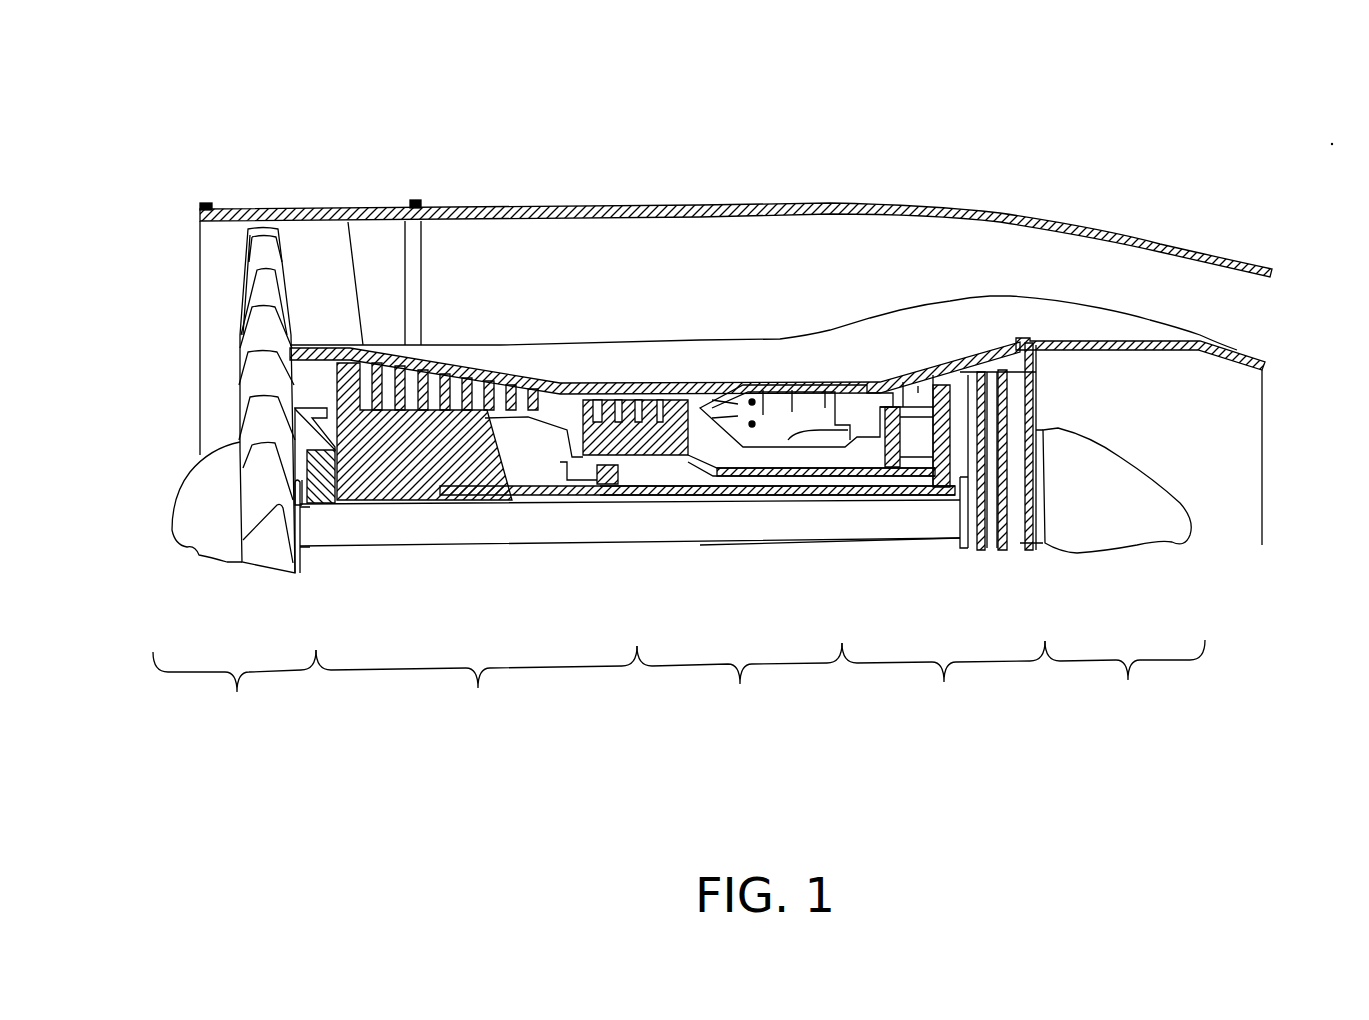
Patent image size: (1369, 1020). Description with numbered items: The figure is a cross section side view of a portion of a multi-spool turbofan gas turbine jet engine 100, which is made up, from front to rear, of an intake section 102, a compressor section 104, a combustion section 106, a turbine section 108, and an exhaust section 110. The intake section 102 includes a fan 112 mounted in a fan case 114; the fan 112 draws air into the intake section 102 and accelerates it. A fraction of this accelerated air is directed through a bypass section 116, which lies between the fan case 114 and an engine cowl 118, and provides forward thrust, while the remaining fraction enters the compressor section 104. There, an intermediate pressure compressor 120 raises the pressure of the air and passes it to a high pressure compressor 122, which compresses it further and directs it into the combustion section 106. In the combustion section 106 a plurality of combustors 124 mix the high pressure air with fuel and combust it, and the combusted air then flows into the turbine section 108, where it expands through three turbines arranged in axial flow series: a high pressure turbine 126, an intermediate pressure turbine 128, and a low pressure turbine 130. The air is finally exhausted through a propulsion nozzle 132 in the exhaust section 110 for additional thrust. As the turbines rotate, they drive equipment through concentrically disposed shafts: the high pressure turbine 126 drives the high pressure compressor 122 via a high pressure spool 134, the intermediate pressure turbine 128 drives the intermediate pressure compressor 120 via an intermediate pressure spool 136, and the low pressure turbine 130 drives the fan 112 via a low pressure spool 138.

The multi-spool turbofan gas turbine jet engine 100 is at (461, 152).
The intake section 102 is at (234, 588).
The compressor section 104 is at (502, 565).
The combustion section 106 is at (786, 589).
The turbine section 108 is at (943, 532).
The exhaust section 110 is at (1112, 573).
The fan 112 is at (243, 345).
The fan case 114 is at (322, 208).
The bypass section 116 is at (636, 220).
The engine cowl 118 is at (724, 340).
The intermediate pressure compressor 120 is at (425, 500).
The high pressure compressor 122 is at (627, 503).
The combustors 124 is at (856, 387).
The high pressure turbine 126 is at (890, 385).
The intermediate pressure turbine 128 is at (960, 360).
The low pressure turbine 130 is at (1024, 362).
The propulsion nozzle 132 is at (1245, 452).
The high pressure spool 134 is at (742, 470).
The intermediate pressure spool 136 is at (833, 500).
The low pressure spool 138 is at (923, 527).